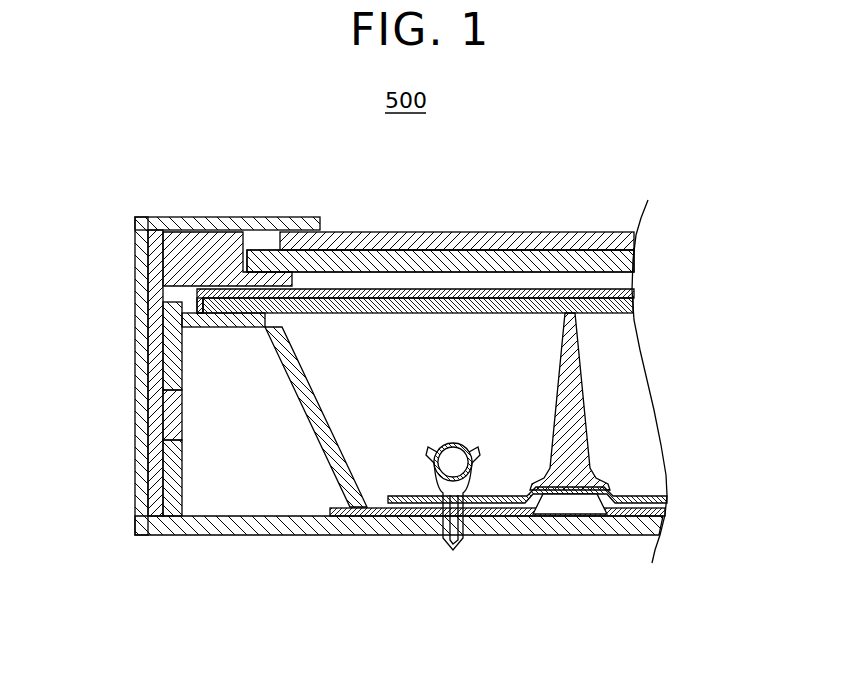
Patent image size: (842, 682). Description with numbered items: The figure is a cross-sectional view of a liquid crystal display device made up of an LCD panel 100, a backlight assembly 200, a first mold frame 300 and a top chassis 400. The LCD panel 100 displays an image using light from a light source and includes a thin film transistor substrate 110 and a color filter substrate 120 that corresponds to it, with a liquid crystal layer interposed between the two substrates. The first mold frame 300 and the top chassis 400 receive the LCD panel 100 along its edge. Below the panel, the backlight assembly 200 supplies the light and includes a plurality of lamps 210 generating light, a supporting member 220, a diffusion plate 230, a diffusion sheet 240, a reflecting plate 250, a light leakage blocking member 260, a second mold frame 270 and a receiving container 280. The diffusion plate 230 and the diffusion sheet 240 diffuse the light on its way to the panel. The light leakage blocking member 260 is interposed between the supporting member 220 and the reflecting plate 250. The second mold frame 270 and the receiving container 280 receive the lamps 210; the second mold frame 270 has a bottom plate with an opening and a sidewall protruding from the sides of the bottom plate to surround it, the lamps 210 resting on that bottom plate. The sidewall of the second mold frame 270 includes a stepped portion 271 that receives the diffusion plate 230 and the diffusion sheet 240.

The LCD panel 100 is at (733, 223).
The thin film transistor (TFT) substrate 110 is at (635, 242).
The color filter substrate 120 is at (635, 262).
The backlight assembly 200 is at (733, 298).
The lamp 210 is at (453, 443).
The supporting member 220 is at (667, 498).
The diffusion plate 230 is at (635, 307).
The diffusion sheet 240 is at (635, 290).
The reflecting plate 250 is at (665, 509).
The light leakage blocking member 260 is at (440, 507).
The second mold frame 270 is at (155, 490).
The stepped portion 271 is at (226, 300).
The receiving container 280 is at (662, 525).
The first mold frame 300 is at (167, 263).
The top chassis 400 is at (140, 310).